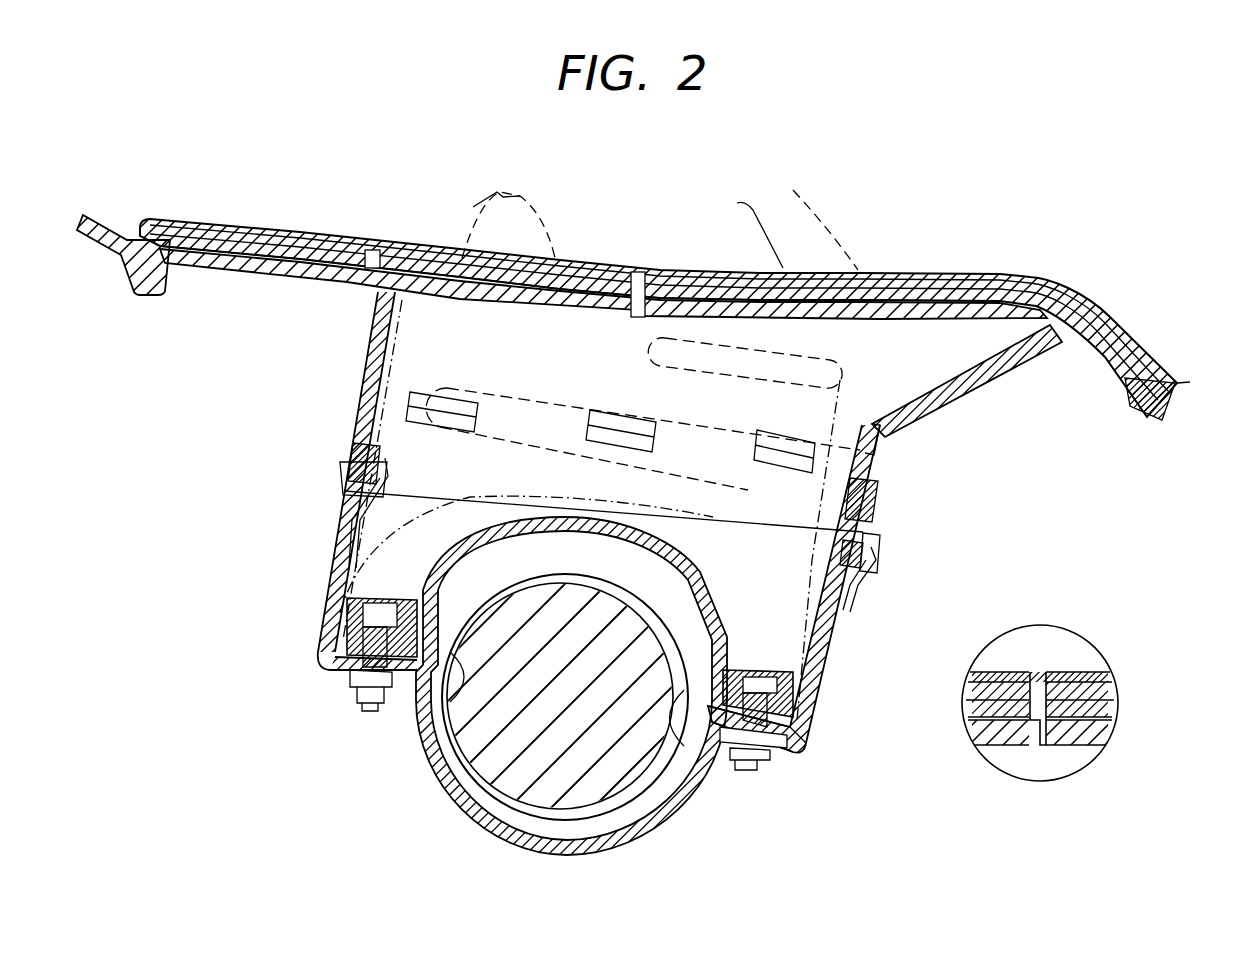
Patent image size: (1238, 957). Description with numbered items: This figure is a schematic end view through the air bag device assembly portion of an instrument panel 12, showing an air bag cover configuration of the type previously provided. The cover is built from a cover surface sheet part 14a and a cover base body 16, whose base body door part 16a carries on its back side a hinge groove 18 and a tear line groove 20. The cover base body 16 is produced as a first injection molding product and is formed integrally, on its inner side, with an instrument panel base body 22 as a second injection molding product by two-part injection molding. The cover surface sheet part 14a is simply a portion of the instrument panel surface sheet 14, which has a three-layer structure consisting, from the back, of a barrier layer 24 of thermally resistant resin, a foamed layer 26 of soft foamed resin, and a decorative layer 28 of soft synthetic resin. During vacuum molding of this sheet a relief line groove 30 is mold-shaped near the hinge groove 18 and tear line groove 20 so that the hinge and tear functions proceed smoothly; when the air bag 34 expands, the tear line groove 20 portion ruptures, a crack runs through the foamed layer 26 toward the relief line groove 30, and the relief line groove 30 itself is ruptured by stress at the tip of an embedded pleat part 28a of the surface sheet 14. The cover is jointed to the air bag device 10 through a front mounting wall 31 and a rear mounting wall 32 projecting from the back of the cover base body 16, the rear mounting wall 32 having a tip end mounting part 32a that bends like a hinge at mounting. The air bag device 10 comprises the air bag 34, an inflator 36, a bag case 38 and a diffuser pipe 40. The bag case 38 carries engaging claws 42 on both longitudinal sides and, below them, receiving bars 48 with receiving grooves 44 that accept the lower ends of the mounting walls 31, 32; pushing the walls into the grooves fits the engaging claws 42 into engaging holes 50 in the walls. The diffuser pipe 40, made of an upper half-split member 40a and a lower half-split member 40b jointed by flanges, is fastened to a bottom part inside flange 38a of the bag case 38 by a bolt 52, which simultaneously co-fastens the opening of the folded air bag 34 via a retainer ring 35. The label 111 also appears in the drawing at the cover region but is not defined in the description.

The air bag device 10 is at (340, 537).
The instrument panel 12 is at (1090, 283).
The instrument panel surface sheet 14 is at (1003, 270).
The cover surface sheet part 14a is at (576, 256).
The cover base body 16 is at (347, 282).
The base body door part 16a is at (507, 310).
The hinge groove 18 is at (387, 320).
The tear line groove 20 is at (637, 292).
The instrument panel base body 22 is at (973, 287).
The barrier layer 24 is at (617, 275).
The foamed layer 26 is at (672, 277).
The decorative layer 28 is at (721, 272).
The embedded pleat part 28a is at (1070, 642).
The relief line groove 30 is at (384, 290).
The front mounting wall 31 is at (377, 363).
The rear mounting wall 32 is at (1005, 362).
The tip end mounting part 32a is at (873, 455).
The air bag 34 is at (805, 677).
The retainer ring 35 is at (340, 627).
The inflator 36 is at (597, 783).
The bag case 38 is at (822, 717).
The bottom part inside flange 38a is at (327, 670).
The diffuser pipe 40 is at (497, 837).
The upper half-split member 40a is at (700, 583).
The lower half-split member 40b is at (453, 800).
The engaging claws 42 is at (370, 435).
The receiving grooves 44 is at (353, 497).
The receiving bars 48 is at (387, 468).
The engaging holes 50 is at (393, 407).
The bolt 52 is at (358, 690).
The trim / headliner end 111 is at (880, 260).